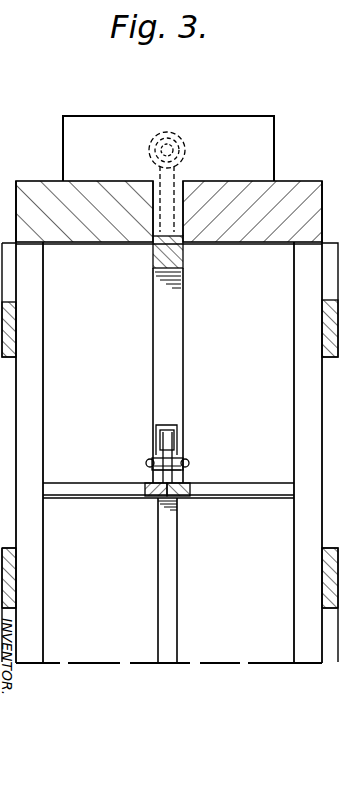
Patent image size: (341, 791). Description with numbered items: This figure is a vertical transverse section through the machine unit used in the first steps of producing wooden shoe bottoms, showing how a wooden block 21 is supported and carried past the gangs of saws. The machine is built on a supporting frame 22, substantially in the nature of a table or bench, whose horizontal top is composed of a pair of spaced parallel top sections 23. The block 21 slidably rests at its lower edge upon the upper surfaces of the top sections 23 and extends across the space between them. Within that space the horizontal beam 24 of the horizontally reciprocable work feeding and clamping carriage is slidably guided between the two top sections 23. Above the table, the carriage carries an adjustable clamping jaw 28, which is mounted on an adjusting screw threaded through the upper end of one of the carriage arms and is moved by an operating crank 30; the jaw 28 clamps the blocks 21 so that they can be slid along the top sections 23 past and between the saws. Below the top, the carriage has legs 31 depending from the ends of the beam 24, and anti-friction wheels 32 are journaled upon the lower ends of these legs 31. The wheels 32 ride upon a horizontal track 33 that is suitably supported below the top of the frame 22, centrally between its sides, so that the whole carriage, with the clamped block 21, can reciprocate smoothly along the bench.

The block 21 is at (245, 120).
The supporting frame 22 is at (302, 386).
The top sections 23 is at (103, 247).
The horizontal beam 24 is at (185, 258).
The adjustable clamping jaw 28 is at (182, 136).
The operating crank 30 is at (186, 190).
The legs 31 is at (178, 369).
The anti-friction wheels 32 is at (174, 438).
The horizontal track 33 is at (182, 498).